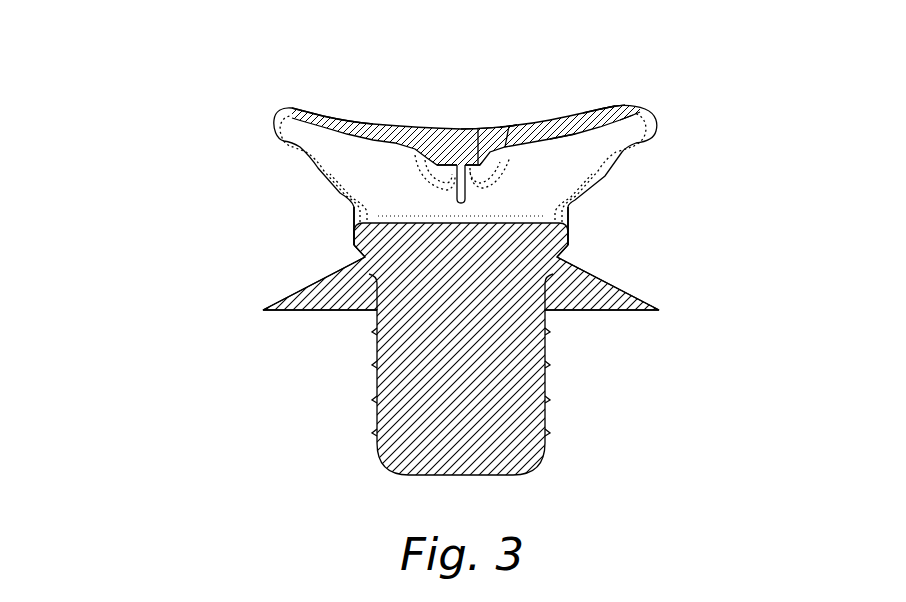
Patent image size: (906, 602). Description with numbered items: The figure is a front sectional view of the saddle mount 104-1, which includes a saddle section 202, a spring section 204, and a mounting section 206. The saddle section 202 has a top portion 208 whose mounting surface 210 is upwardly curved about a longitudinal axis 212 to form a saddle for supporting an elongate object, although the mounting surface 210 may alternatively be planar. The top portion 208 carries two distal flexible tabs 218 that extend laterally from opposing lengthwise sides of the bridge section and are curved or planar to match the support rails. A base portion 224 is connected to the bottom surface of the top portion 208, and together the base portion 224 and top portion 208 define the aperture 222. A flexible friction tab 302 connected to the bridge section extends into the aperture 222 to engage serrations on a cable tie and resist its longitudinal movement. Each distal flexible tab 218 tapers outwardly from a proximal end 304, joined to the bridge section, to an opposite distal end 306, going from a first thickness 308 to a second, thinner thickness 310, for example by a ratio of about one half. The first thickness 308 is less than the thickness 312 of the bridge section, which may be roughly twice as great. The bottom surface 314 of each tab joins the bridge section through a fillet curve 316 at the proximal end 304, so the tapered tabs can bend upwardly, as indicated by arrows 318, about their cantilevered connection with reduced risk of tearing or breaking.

The saddle mount 104-1 is at (178, 44).
The saddle section 202 is at (113, 100).
The spring section 204 is at (675, 286).
The mounting section 206 is at (592, 392).
The top portion 208 is at (257, 195).
The mounting surface 210 is at (491, 116).
The longitudinal axis 212 is at (444, 147).
The distal flexible tabs 218 is at (318, 118).
The aperture 222 is at (356, 157).
The base portion 224 is at (353, 246).
The flexible friction tab 302 is at (467, 188).
The proximal end 304 is at (499, 178).
The distal end 306 is at (627, 137).
The first thickness 308 is at (507, 125).
The second thickness 310 is at (615, 105).
The thickness of the bridge section 312 is at (476, 130).
The bottom surface 314 is at (568, 148).
The fillet curve 316 is at (352, 204).
The arrows 318 is at (327, 115).